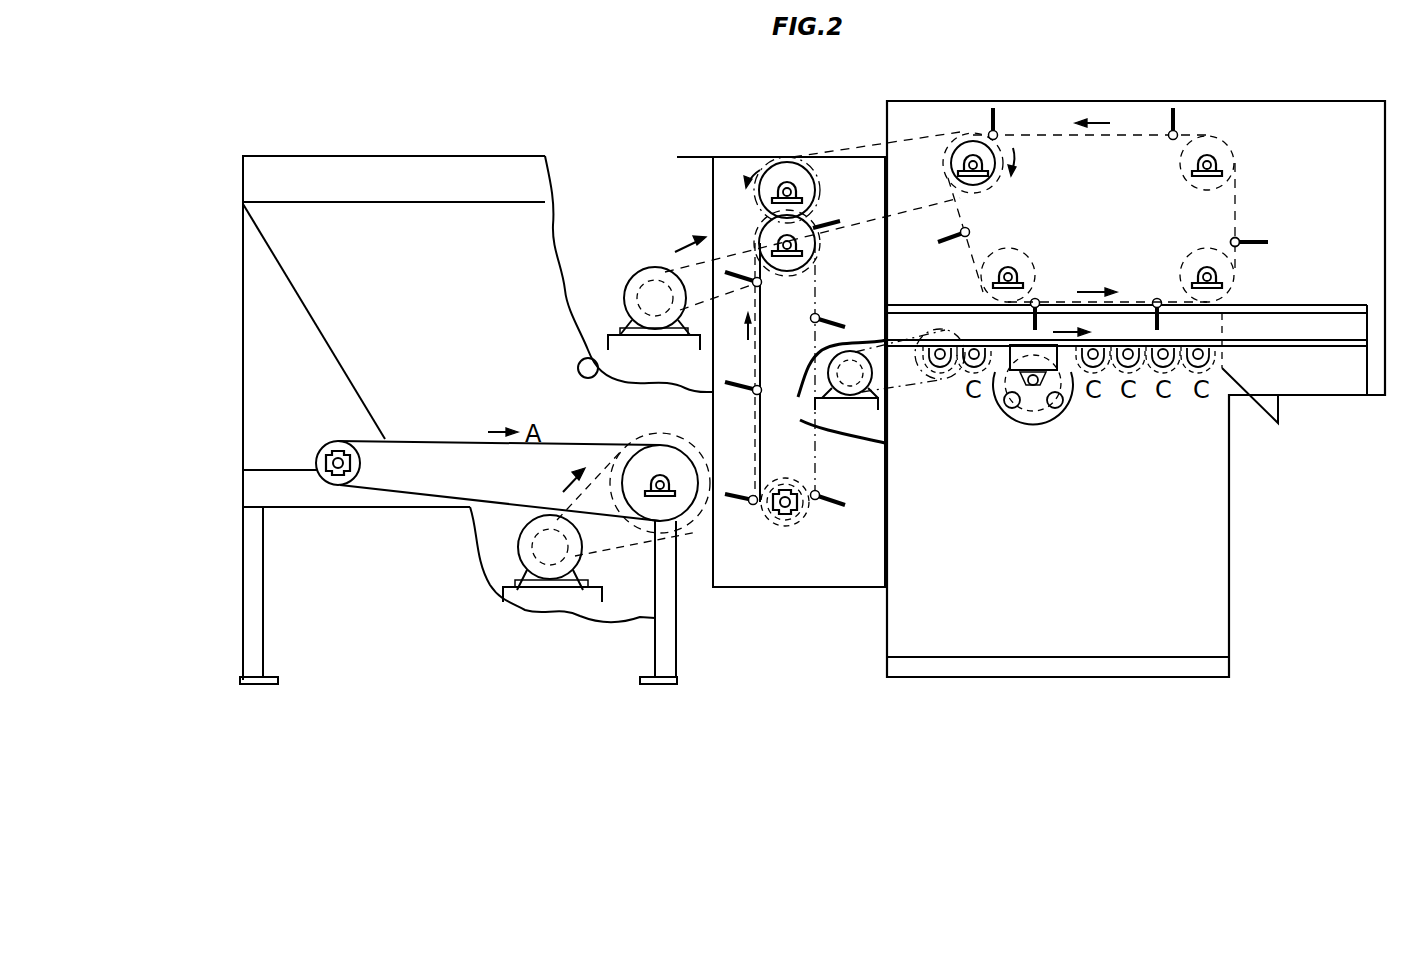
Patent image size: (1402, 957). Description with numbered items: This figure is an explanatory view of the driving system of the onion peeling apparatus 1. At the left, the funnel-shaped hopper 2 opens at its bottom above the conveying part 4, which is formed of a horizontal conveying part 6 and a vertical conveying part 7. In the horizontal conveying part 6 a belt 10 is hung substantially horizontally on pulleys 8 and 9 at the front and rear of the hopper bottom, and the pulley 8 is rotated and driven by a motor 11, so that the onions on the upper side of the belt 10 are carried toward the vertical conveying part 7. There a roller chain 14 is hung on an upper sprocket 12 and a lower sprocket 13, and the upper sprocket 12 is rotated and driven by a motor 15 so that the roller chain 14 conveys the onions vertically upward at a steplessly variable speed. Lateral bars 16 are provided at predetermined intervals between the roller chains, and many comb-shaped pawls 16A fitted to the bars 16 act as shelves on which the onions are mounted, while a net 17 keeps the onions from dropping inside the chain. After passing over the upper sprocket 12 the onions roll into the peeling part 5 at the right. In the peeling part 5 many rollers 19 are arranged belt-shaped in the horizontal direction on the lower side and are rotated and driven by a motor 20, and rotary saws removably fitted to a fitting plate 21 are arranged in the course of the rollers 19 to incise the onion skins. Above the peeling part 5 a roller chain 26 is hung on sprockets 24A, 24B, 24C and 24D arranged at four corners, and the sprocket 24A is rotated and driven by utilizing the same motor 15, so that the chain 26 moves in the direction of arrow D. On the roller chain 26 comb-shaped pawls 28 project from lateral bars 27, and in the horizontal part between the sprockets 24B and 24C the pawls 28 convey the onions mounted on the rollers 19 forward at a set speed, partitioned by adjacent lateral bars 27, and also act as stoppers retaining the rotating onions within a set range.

The machine body 1 is at (1243, 610).
The hopper 2 is at (587, 358).
The conveying part 4 is at (690, 585).
The peeling part 5 is at (1140, 403).
The horizontal conveying part 6 is at (447, 502).
The vertical conveying part 7 is at (796, 534).
The pulley 8 is at (625, 522).
The pulley 9 is at (338, 486).
The belt 10 is at (380, 490).
The motor 11 is at (520, 553).
The upper sprocket 12 is at (758, 235).
The lower sprocket 13 is at (772, 532).
The roller chain 14 is at (818, 447).
The motor 15 is at (653, 268).
The bar 16 is at (818, 315).
The comb-shaped pawl 16A is at (828, 505).
The net 17 is at (762, 447).
The roller 19 is at (1237, 407).
The motor 20 is at (862, 397).
The fitting plate 21 is at (1040, 423).
The sprocket 24A is at (953, 148).
The sprocket 24B is at (1022, 250).
The sprocket 24C is at (1190, 250).
The sprocket 24D is at (1214, 137).
The roller chain 26 is at (1240, 178).
The lateral bar 27 is at (1238, 240).
The comb-shaped pawl 28 is at (1270, 243).